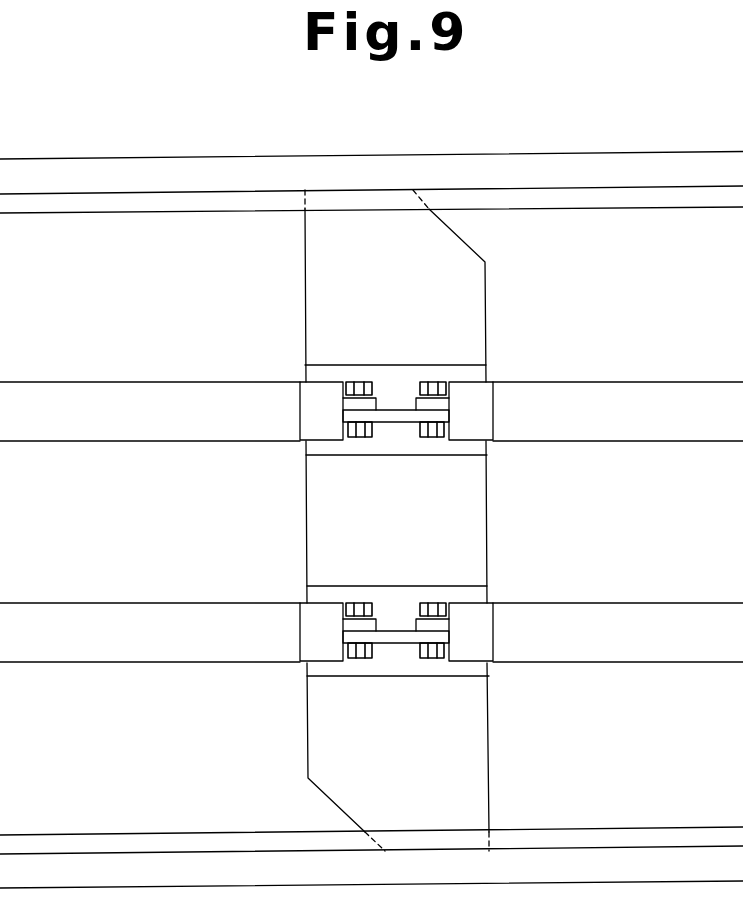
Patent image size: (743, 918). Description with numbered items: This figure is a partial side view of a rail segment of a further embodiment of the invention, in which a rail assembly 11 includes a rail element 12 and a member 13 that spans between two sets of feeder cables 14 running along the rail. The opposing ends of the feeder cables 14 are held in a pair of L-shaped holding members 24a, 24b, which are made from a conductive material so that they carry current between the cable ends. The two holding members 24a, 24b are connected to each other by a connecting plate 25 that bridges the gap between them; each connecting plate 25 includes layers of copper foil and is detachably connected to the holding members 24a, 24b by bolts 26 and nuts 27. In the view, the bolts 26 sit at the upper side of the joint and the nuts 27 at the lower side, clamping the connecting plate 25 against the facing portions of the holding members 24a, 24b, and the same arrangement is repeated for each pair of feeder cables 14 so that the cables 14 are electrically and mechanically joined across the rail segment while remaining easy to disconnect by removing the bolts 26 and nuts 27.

The vehicle body structure 11 is at (627, 143).
The side member 12 is at (518, 168).
The cross member 13 is at (488, 508).
The feeder cable 14 is at (158, 432).
The holding member 24a is at (462, 402).
The holding member 24b is at (332, 413).
The connecting plate 25 is at (395, 411).
The bolt 26 is at (361, 382).
The nut 27 is at (358, 437).